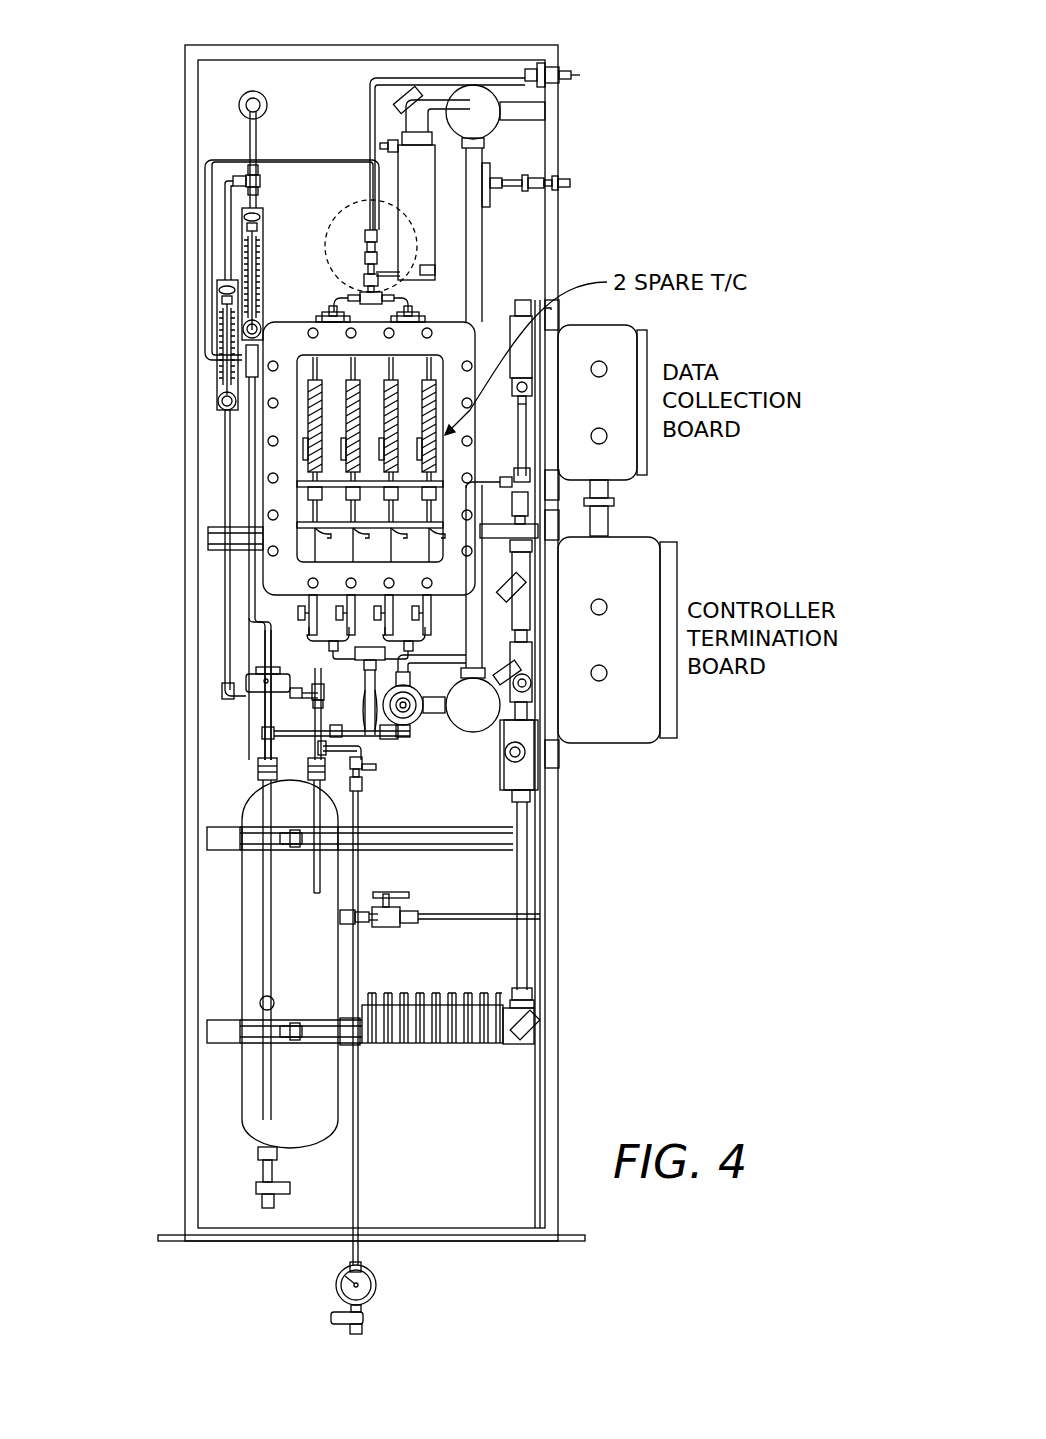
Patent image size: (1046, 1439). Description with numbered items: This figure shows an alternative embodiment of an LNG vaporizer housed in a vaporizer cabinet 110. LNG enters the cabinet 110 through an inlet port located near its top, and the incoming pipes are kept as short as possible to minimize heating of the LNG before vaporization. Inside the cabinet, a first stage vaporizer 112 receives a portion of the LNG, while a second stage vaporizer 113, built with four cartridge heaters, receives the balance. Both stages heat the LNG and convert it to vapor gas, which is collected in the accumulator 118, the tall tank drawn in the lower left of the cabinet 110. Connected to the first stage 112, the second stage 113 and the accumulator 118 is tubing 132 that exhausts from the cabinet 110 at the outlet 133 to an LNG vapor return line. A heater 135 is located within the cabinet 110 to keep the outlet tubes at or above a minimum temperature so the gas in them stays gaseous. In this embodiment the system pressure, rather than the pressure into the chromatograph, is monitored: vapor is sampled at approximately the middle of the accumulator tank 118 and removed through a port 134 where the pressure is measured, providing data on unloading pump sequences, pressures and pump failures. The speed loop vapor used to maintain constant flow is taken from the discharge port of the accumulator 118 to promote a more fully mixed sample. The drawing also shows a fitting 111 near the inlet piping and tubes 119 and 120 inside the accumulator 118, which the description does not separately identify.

The vaporizer cabinet 110 is at (185, 78).
The supply fitting 111 is at (342, 206).
The first stage vaporizer 112 is at (420, 222).
The second stage vaporizer 113 is at (277, 425).
The accumulator 118 is at (255, 810).
The vessel inner tube 119 is at (262, 885).
The vessel second tube 120 is at (316, 882).
The tubing 132 is at (250, 600).
The outlet 133 is at (580, 73).
The port 134 is at (360, 926).
The heater 135 is at (422, 1045).